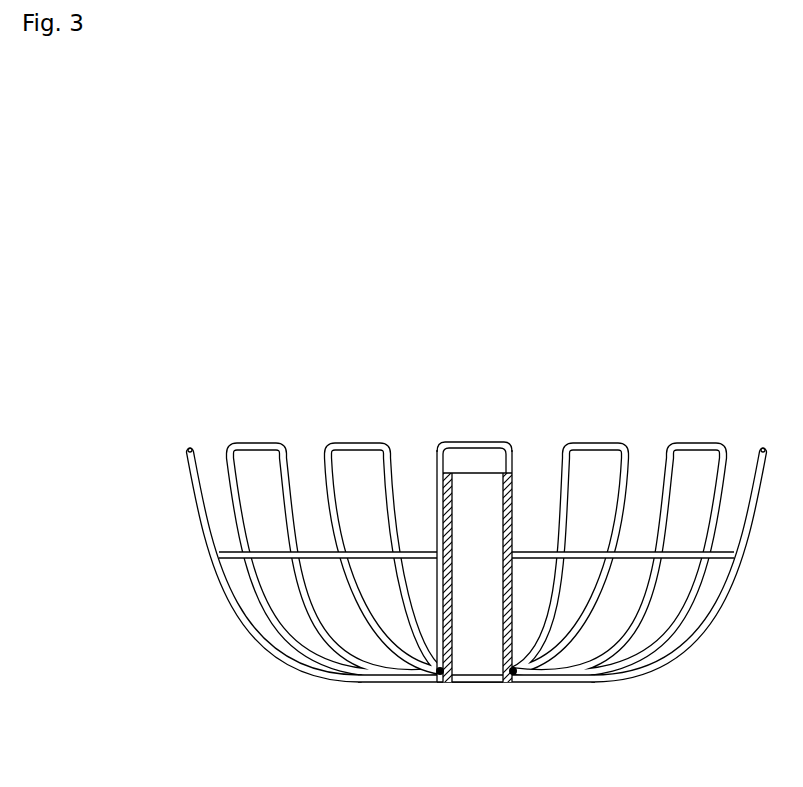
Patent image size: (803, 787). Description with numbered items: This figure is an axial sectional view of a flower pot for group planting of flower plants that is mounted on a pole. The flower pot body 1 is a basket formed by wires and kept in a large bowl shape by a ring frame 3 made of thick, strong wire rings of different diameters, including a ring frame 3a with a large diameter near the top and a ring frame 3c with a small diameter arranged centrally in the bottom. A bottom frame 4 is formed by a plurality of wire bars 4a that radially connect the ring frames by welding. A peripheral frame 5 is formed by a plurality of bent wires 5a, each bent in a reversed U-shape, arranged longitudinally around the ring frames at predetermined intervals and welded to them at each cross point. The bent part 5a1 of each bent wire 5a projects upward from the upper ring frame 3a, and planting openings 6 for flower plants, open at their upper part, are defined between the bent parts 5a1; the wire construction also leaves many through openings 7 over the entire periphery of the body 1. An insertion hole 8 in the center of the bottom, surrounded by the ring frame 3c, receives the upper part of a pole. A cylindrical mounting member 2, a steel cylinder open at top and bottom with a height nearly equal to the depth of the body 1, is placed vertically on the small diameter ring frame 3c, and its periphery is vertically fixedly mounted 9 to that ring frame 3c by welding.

The flower pot body 1 is at (178, 453).
The cylindrical mounting member 2 is at (474, 470).
The ring frame 3 is at (496, 568).
The ring frame with a large diameter 3a is at (675, 550).
The ring frame with a small diameter 3c is at (443, 685).
The bottom frame 4 is at (462, 707).
The wire bar 4a is at (415, 683).
The peripheral frame 5 is at (486, 530).
The bent wire 5a is at (703, 626).
The bent part 5a1 is at (328, 443).
The planting opening 6 is at (206, 462).
The through opening 7 is at (363, 517).
The insertion hole 8 is at (488, 683).
The fixedly mounted portion 9 is at (518, 673).